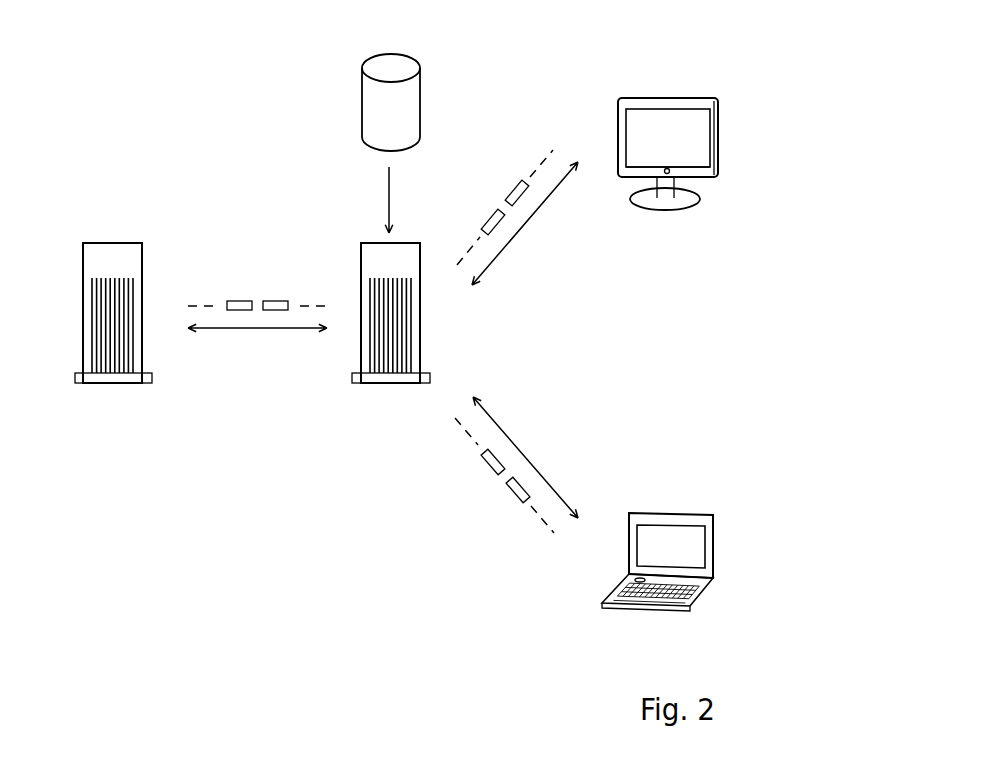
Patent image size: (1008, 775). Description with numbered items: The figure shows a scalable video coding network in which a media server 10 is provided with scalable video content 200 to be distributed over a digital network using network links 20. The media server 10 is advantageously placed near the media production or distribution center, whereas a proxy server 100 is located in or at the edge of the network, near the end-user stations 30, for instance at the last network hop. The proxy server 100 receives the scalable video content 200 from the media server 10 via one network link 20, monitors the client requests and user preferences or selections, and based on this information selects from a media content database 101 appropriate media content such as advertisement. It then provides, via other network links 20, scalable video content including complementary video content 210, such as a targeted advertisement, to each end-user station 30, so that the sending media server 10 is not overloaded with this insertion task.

The media server 10 is at (95, 383).
The proxy server 100 is at (373, 383).
The media content database 101 is at (422, 90).
The network link 20 is at (260, 328).
The scalable video content 200 is at (273, 301).
The complementary video content 210 is at (517, 190).
The end-user station 30 is at (718, 133).